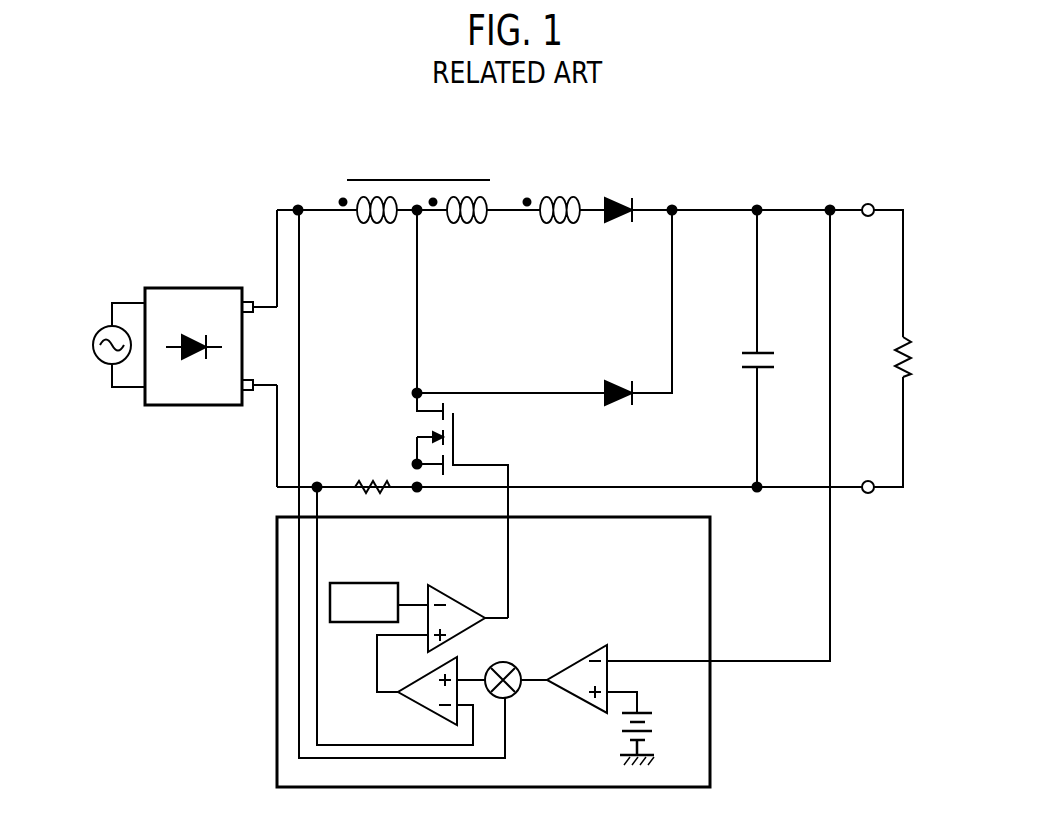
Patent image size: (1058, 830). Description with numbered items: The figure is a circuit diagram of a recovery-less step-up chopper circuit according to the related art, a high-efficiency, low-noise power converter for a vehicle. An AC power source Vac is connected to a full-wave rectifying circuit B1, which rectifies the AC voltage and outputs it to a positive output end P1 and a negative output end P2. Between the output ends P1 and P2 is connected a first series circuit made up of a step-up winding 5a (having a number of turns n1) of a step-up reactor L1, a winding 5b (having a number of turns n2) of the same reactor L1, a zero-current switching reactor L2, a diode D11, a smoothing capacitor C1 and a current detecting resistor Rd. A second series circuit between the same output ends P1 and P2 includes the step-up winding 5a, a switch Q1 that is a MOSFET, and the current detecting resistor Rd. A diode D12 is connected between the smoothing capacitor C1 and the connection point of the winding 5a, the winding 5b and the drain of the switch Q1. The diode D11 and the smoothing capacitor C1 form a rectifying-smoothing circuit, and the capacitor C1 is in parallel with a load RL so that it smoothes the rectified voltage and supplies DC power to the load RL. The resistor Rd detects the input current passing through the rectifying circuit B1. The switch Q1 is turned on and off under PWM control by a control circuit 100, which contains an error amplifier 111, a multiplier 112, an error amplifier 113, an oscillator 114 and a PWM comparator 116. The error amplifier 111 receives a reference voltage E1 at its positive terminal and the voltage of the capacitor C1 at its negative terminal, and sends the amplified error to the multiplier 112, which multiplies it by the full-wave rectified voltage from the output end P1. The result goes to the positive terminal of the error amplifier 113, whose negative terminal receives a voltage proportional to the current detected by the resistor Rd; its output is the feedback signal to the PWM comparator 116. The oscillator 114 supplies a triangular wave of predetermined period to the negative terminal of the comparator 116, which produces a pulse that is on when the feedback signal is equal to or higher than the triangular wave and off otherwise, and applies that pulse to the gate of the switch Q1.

The control circuit 100 is at (277, 614).
The error amplifier 111 is at (582, 700).
The multiplier 112 is at (519, 657).
The error amplifier 113 is at (427, 708).
The oscillator 114 is at (375, 583).
The PWM comparator 116 is at (458, 597).
The step-up winding 5a is at (363, 223).
The winding 5b is at (453, 223).
The full-wave rectifying circuit B1 is at (195, 288).
The positive output end P1 is at (254, 278).
The negative output end P2 is at (255, 411).
The step-up reactor L1 is at (420, 215).
The zero-current switching reactor L2 is at (560, 230).
The diode D11 is at (619, 194).
The diode D12 is at (626, 412).
The smoothing capacitor C1 is at (741, 361).
The load RL is at (923, 357).
The switch Q1 is at (462, 510).
The current detecting resistor Rd is at (372, 469).
The reference voltage E1 is at (654, 737).
The AC power source Vac is at (94, 345).
The number of turns n1 is at (380, 226).
The number of turns n2 is at (474, 226).